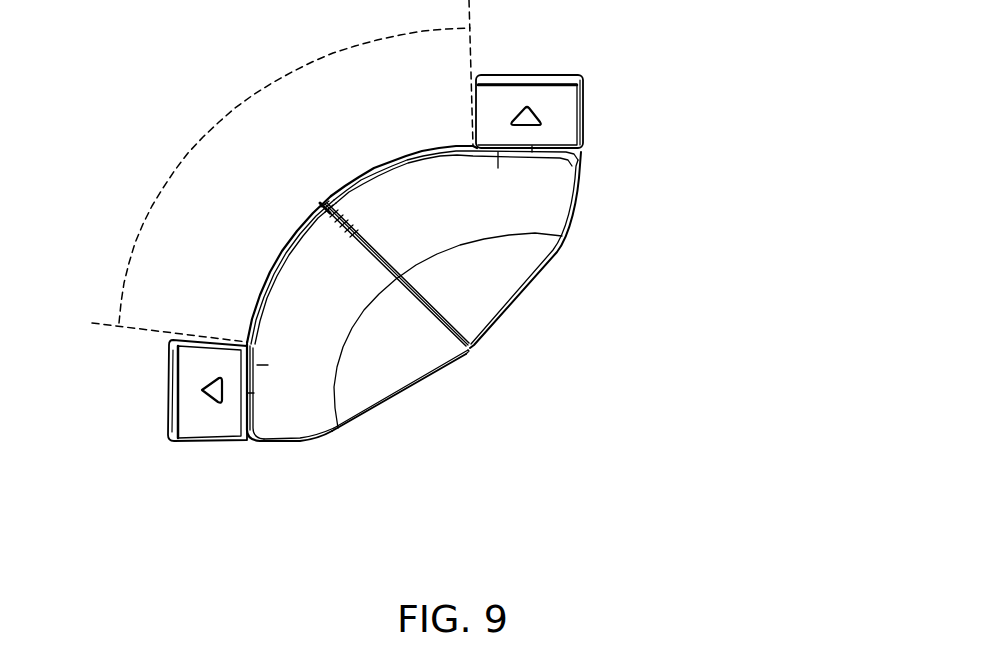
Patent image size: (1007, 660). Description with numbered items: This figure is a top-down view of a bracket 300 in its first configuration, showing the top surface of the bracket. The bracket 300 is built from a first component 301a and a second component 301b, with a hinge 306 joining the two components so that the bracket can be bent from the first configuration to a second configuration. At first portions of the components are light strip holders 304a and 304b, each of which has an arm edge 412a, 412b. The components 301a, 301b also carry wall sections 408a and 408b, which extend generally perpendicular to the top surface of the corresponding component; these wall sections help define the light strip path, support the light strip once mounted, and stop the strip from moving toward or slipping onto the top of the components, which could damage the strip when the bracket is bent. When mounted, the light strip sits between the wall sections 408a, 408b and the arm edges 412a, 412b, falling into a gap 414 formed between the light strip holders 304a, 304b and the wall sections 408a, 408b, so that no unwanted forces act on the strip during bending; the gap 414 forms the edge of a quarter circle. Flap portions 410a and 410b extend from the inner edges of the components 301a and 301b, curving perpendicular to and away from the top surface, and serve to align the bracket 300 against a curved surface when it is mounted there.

The bracket 300 is at (148, 100).
The gap 414 is at (223, 118).
The hinge 306 is at (353, 233).
The wall section 408a is at (282, 245).
The wall section 408b is at (436, 152).
The light strip holder 304a is at (198, 462).
The light strip holder 304b is at (614, 114).
The arm edge 412a is at (149, 375).
The arm edge 412b is at (540, 66).
The flap portion 410a is at (453, 362).
The flap portion 410b is at (517, 305).
The first component 301a is at (400, 468).
The second component 301b is at (670, 253).